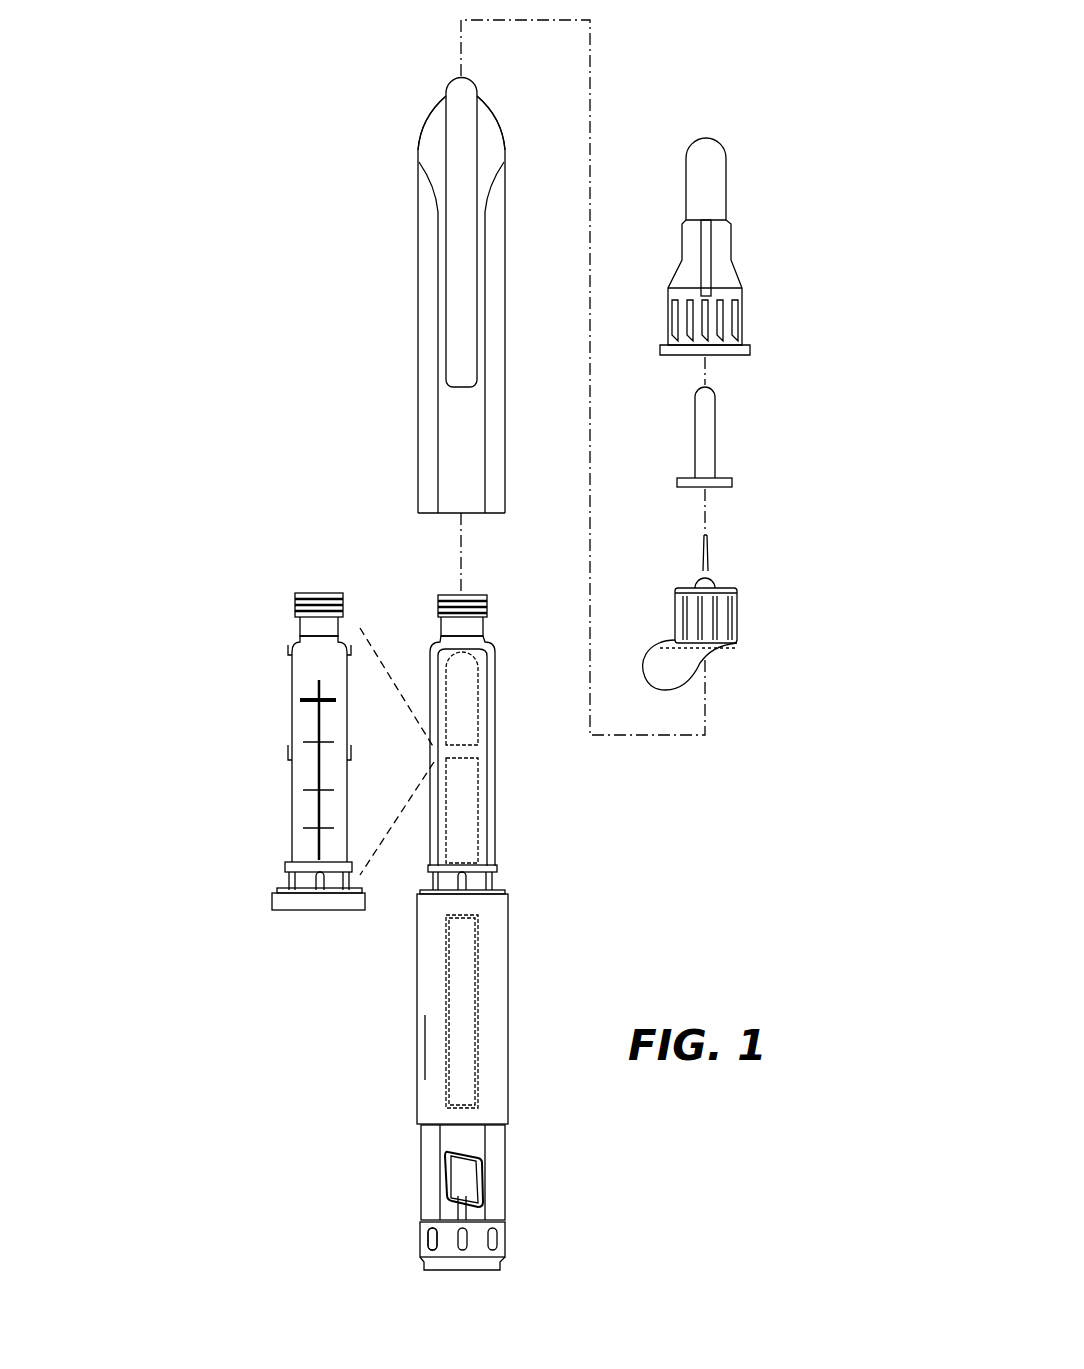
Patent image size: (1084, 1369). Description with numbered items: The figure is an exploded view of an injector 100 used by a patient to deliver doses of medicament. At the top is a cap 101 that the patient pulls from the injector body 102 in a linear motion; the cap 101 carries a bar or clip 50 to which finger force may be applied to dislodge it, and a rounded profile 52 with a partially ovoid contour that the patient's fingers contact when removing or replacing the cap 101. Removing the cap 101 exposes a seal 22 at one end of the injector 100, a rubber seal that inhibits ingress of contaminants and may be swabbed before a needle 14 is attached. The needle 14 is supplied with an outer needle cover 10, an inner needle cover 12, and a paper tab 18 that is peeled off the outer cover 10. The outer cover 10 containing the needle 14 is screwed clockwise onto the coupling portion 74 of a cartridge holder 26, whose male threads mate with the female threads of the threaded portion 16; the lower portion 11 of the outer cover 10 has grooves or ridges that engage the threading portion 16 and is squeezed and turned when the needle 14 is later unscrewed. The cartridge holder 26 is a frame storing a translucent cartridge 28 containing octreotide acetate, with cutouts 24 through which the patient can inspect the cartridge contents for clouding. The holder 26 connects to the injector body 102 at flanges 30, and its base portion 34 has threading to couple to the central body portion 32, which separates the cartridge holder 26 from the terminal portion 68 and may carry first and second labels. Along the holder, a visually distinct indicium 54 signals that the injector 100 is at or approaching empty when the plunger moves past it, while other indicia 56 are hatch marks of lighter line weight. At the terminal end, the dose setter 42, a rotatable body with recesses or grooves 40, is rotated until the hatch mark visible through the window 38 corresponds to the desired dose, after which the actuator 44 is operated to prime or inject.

The injector 100 is at (285, 183).
The cap 101 is at (418, 308).
The rounded profile 52 is at (435, 135).
The bar or clip 50 is at (460, 378).
The outer needle cover 10 is at (727, 192).
The lower portion 11 is at (746, 310).
The inner needle cover 12 is at (716, 445).
The needle 14 is at (712, 535).
The threaded portion 16 is at (740, 618).
The tab 18 is at (670, 695).
The seal 22 is at (440, 596).
The cutouts 24 is at (470, 683).
The cartridge holder 26 is at (498, 748).
The cartridge 28 is at (472, 795).
The flanges 30 is at (468, 880).
The central body portion 32 is at (508, 996).
The injector body 102 is at (418, 1012).
The terminal portion 68 is at (506, 1152).
The window 38 is at (490, 1192).
The recesses or grooves 40 is at (425, 1240).
The dose setter 42 is at (482, 1238).
The actuator 44 is at (450, 1272).
The coupling portion 74 is at (305, 596).
The indicium 54 is at (300, 708).
The indicia 56 is at (303, 793).
The base portion 34 is at (275, 905).